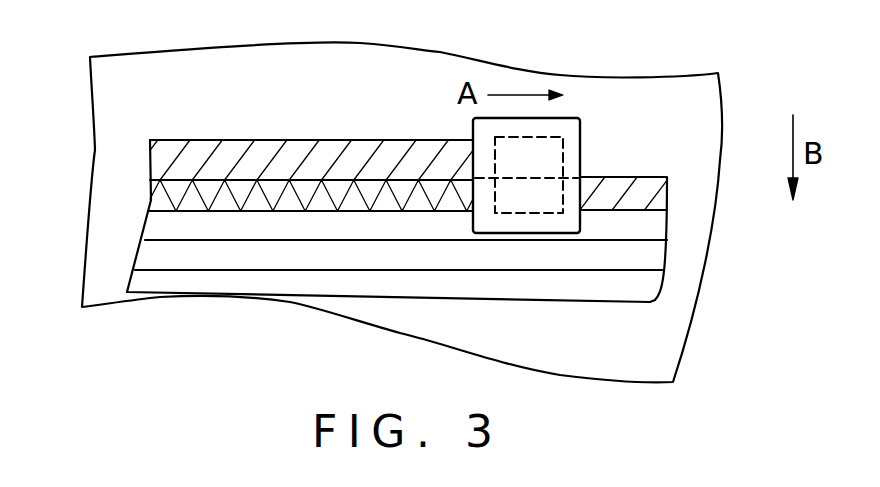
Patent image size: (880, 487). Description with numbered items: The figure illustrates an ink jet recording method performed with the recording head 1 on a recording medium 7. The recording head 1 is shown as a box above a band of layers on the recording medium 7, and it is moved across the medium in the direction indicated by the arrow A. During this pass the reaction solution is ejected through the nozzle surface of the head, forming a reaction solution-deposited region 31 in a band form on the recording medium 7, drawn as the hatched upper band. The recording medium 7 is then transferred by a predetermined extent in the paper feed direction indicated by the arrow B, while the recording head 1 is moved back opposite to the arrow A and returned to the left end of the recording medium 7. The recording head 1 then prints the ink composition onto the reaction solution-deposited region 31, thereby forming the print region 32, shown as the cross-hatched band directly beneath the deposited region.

The recording head 1 is at (570, 127).
The recording medium 7 is at (672, 350).
The reaction solution-deposited region 31 is at (150, 162).
The print region 32 is at (150, 200).